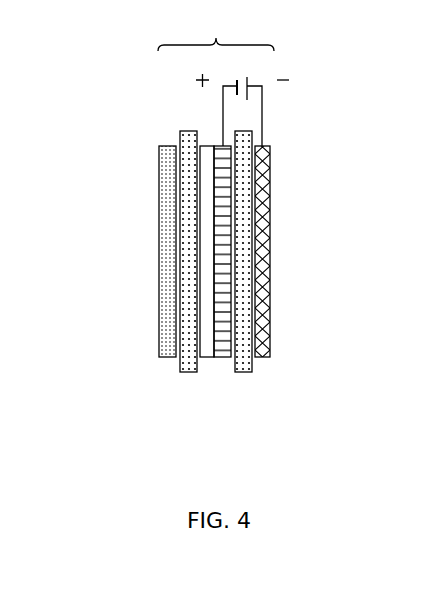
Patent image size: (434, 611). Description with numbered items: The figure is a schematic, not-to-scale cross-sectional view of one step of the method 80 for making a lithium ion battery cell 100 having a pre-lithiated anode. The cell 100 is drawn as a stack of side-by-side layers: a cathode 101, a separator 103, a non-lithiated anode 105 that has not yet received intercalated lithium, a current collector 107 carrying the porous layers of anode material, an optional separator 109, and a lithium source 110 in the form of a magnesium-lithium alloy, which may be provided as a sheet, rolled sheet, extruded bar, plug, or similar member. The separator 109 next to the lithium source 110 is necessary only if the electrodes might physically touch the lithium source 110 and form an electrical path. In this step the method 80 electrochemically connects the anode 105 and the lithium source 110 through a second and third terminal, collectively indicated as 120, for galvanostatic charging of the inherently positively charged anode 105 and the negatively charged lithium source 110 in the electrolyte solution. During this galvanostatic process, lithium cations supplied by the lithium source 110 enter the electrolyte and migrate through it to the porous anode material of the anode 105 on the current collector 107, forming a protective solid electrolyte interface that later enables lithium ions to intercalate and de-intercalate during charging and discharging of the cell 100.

The lithium ion battery cell 100 is at (216, 32).
The method 80 is at (86, 197).
The second and third terminal 120 is at (306, 124).
The cathode 101 is at (167, 360).
The separator 103 is at (188, 372).
The anode 105 is at (207, 357).
The current collector 107 is at (223, 357).
The optional separator 109 is at (243, 372).
The lithium source 110 is at (265, 357).